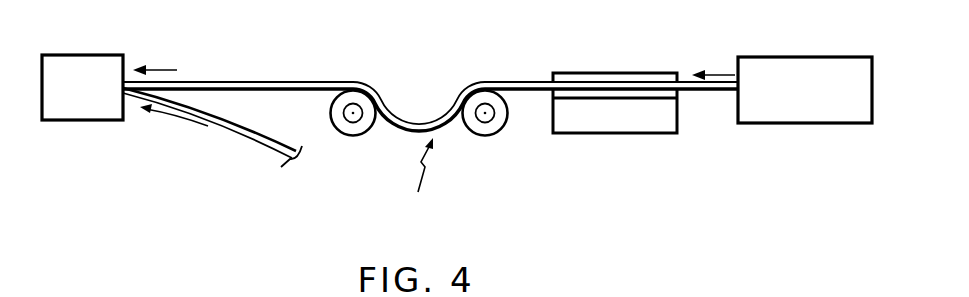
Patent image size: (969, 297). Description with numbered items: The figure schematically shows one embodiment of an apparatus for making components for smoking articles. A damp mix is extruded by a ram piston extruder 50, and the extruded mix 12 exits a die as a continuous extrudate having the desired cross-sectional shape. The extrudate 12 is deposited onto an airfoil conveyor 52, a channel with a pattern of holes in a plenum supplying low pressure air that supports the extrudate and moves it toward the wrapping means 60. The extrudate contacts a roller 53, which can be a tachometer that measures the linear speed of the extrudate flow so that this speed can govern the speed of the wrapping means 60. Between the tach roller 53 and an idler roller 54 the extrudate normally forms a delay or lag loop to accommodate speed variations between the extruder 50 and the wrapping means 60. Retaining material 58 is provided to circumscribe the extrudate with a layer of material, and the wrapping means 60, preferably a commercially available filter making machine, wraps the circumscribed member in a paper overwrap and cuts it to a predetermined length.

The extruded mix 12 is at (532, 82).
The ram piston extruder 50 is at (793, 101).
The airfoil conveyor 52 is at (620, 118).
The roller 53 is at (489, 130).
The idler roller 54 is at (362, 130).
The retaining material 58 is at (232, 130).
The wrapping means 60 is at (67, 95).